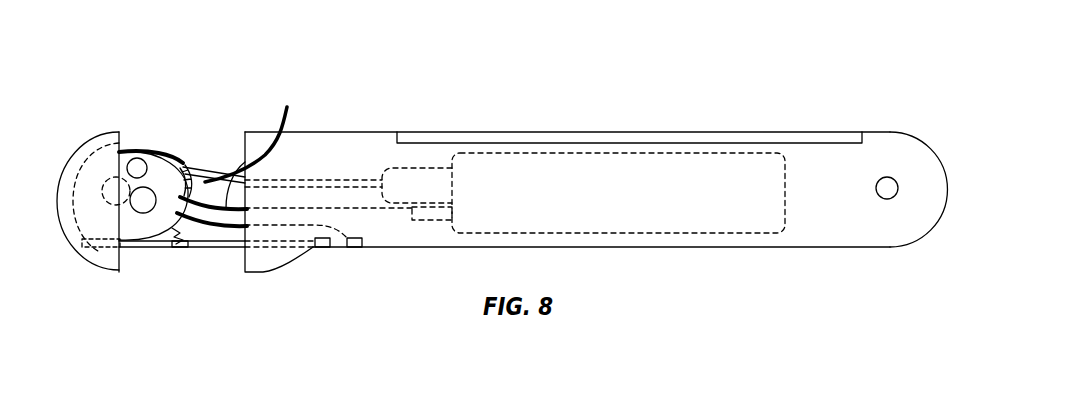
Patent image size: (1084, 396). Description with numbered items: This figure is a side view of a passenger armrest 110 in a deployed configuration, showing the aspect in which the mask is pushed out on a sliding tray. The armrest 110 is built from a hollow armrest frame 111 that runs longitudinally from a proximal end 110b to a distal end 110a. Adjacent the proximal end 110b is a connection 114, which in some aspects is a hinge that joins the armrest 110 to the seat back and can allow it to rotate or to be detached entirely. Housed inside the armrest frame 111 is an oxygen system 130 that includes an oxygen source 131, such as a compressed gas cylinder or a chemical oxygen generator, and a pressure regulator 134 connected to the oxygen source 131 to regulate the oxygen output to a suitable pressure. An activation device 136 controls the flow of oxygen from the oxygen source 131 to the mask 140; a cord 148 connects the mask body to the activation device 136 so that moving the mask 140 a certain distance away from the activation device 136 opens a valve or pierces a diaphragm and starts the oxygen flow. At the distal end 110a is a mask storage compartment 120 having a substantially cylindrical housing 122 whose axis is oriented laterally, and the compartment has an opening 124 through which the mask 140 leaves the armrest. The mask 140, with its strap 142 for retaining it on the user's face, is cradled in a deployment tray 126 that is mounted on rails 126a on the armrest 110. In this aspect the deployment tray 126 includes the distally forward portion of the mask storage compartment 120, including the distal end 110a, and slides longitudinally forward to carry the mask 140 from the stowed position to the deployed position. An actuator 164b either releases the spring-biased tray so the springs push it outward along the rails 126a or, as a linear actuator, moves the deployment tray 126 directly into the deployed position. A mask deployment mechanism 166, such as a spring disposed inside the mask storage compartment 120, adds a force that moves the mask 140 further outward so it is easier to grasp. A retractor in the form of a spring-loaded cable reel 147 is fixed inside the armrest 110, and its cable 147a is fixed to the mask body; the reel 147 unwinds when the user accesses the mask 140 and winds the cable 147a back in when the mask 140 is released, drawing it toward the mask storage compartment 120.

The passenger armrest 110 is at (790, 80).
The distal end 110a is at (52, 227).
The proximal end 110b is at (943, 217).
The armrest frame 111 is at (825, 248).
The connection 114 is at (885, 177).
The mask storage compartment 120 is at (263, 270).
The cylindrical housing 122 is at (107, 260).
The opening 124 is at (78, 158).
The deployment tray 126 is at (98, 247).
The rails 126a is at (193, 247).
The oxygen system 130 is at (723, 160).
The oxygen source 131 is at (657, 163).
The pressure regulator 134 is at (422, 177).
The activation device 136 is at (437, 222).
The mask 140 is at (130, 137).
The strap 142 is at (148, 153).
The spring-loaded cable reel 147 is at (355, 247).
The cable 147a is at (323, 247).
The cord 148 is at (247, 141).
The actuator 164b is at (323, 247).
The mask deployment mechanism 166 is at (202, 197).